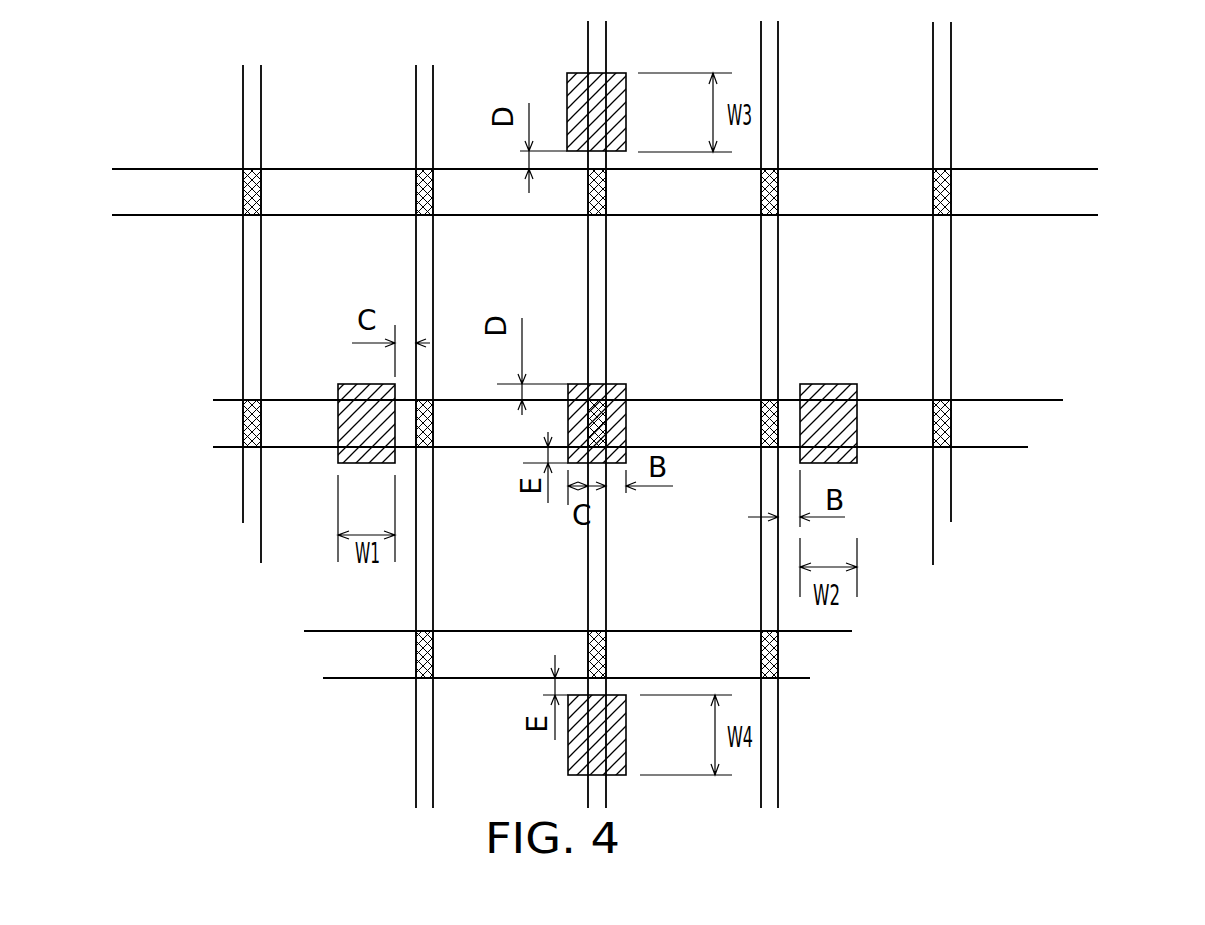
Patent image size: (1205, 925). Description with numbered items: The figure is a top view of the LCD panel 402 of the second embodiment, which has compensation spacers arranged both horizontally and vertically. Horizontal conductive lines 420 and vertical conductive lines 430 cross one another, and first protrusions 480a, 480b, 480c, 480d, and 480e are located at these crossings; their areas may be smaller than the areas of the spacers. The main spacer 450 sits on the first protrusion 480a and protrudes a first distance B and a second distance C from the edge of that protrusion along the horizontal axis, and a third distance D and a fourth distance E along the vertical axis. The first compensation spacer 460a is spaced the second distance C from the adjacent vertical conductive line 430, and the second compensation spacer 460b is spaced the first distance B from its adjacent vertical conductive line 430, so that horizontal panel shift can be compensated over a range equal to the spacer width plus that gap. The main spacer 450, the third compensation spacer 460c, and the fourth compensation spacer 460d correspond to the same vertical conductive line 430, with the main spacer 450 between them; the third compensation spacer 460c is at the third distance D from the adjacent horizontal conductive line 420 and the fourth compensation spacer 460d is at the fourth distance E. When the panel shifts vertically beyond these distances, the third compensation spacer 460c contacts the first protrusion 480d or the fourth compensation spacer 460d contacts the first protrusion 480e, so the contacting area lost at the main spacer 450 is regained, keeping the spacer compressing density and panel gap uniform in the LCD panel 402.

The LCD panel 402 is at (1070, 685).
The horizontal conductive line 420 is at (1063, 188).
The vertical conductive line 430 is at (598, 38).
The main spacer 450 is at (615, 385).
The first compensation spacer 460a is at (353, 385).
The second compensation spacer 460b is at (832, 383).
The third compensation spacer 460c is at (615, 108).
The fourth compensation spacer 460d is at (620, 730).
The first protrusion 480a is at (583, 417).
The first protrusion 480b is at (752, 423).
The first protrusion 480c is at (447, 418).
The first protrusion 480d is at (613, 195).
The first protrusion 480e is at (630, 657).